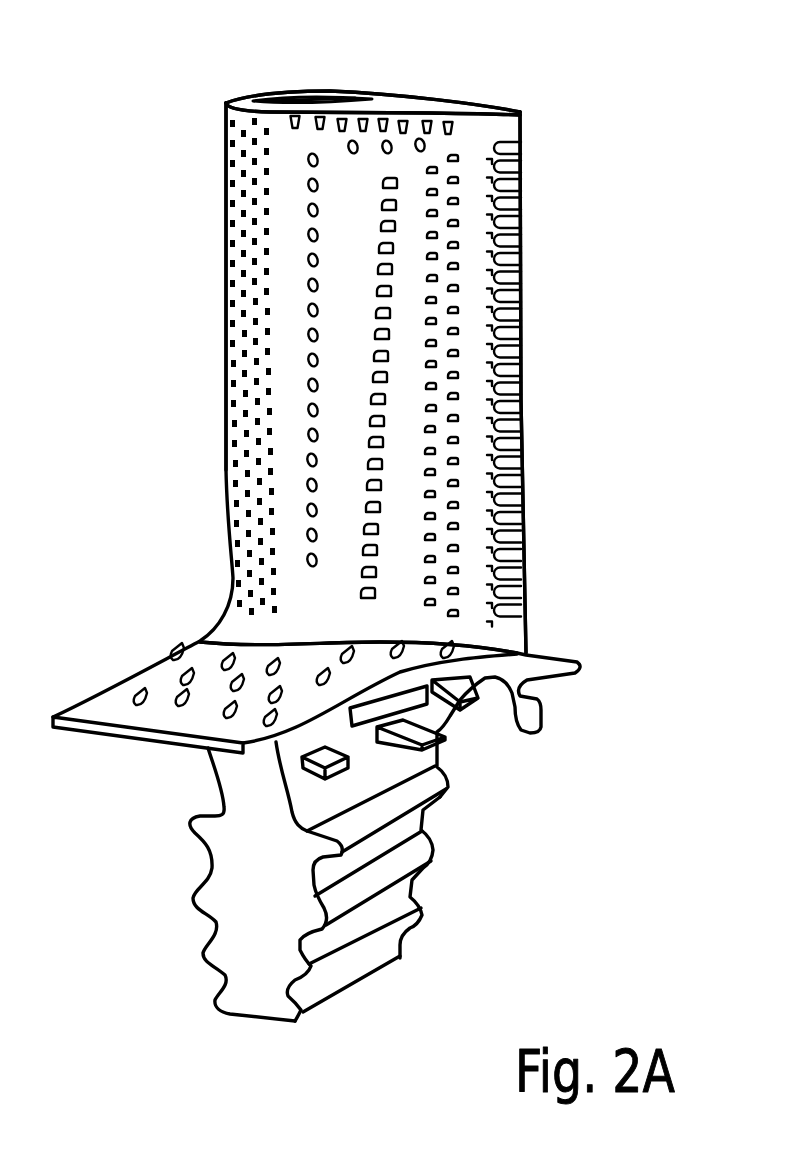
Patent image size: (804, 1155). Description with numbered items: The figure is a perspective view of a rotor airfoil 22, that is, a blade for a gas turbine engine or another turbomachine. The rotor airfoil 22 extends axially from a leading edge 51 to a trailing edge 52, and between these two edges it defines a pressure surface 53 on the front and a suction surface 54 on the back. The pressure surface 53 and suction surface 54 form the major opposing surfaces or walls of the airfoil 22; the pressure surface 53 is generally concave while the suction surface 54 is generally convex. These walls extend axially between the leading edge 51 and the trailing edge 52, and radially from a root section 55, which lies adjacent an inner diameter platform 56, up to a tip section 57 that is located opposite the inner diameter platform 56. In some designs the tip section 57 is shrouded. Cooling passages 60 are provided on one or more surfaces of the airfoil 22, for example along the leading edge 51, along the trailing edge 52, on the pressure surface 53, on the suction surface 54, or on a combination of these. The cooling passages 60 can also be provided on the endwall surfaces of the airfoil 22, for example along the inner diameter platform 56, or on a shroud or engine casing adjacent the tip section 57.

The rotor airfoil 22 is at (112, 111).
The leading edge 51 is at (225, 268).
The trailing edge 52 is at (522, 385).
The pressure surface 53 is at (343, 397).
The suction surface 54 is at (458, 96).
The root section 55 is at (250, 630).
The inner diameter platform 56 is at (130, 670).
The tip section 57 is at (400, 108).
The cooling passages 60 is at (385, 226).